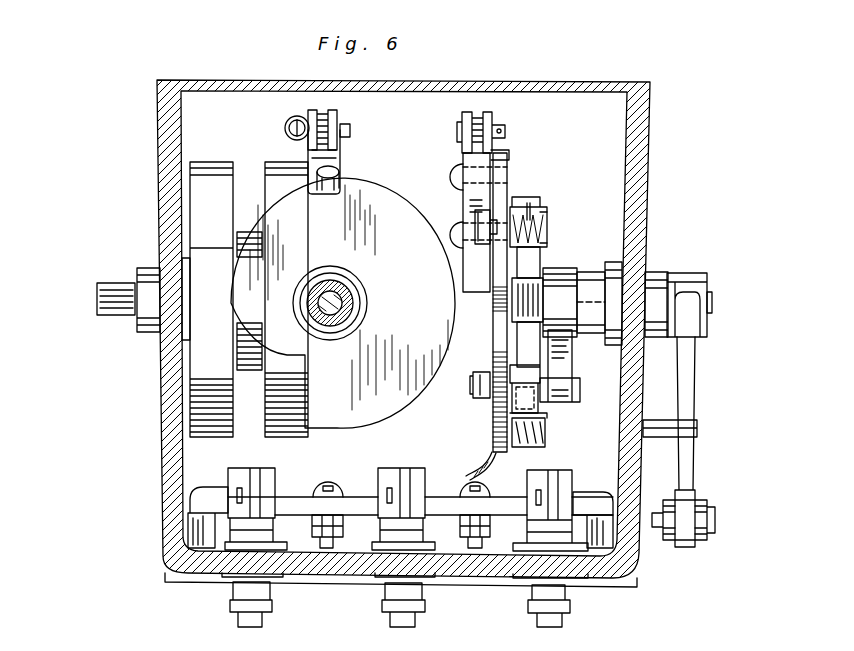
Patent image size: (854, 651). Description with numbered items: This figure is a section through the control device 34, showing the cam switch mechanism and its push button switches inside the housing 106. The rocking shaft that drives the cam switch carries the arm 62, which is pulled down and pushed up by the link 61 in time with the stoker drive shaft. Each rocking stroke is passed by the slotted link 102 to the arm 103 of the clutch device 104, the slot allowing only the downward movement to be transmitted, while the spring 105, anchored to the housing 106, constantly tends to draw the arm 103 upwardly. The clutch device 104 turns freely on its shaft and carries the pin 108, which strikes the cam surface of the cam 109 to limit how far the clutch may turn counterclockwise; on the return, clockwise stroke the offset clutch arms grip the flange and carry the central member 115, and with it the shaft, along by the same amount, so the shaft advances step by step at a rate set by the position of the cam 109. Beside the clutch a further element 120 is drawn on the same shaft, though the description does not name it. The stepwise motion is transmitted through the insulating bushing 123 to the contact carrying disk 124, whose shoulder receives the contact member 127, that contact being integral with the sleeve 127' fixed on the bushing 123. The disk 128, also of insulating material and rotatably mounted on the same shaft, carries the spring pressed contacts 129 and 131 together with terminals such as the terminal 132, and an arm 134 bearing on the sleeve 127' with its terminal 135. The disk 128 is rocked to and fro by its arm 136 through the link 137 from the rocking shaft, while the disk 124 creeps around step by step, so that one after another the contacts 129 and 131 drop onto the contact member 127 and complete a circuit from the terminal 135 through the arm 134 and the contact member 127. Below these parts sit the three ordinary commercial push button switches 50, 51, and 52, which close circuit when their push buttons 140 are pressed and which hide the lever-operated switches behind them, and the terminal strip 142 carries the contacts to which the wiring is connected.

The control device 34 is at (160, 170).
The push button switch 50 is at (263, 470).
The push button switch 51 is at (406, 470).
The push button switch 52 is at (556, 470).
The link 61 is at (702, 542).
The arm 62 is at (692, 393).
The link 102 is at (322, 113).
The arm 103 is at (341, 157).
The clutch device 104 is at (280, 163).
The spring 105 is at (285, 128).
The housing 106 is at (173, 527).
The pin 108 is at (342, 173).
The cam 109 is at (400, 212).
The central member 115 is at (250, 370).
The gear 120 is at (210, 162).
The bushing 123 is at (591, 330).
The contact carrying disk 124 is at (522, 347).
The contact member 127 is at (552, 281).
The sleeve 127' is at (582, 278).
The disk 128 is at (506, 157).
The spring pressed contact 129 is at (540, 408).
The spring pressed contact 131 is at (531, 198).
The terminal 132 is at (476, 226).
The arm 134 is at (573, 370).
The terminal 135 is at (472, 387).
The arm 136 is at (463, 162).
The link 137 is at (480, 112).
The push button 140 is at (262, 622).
The terminal strip 142 is at (291, 496).